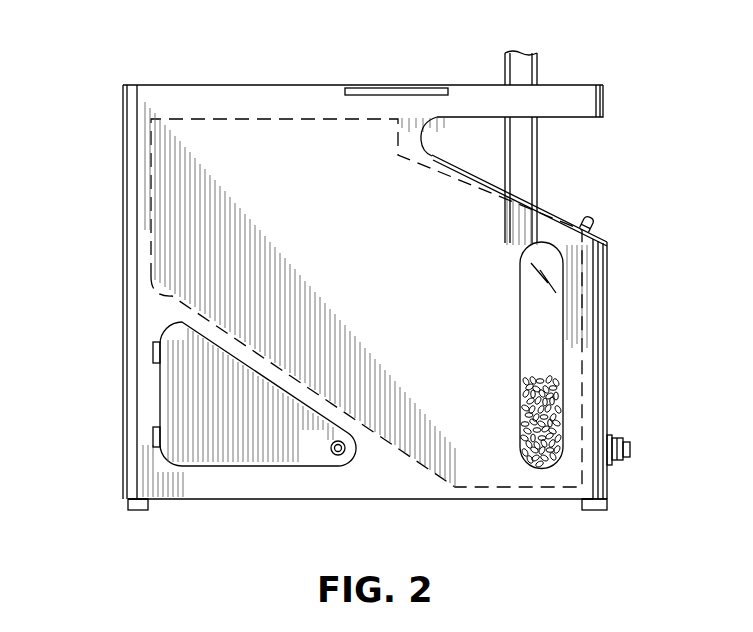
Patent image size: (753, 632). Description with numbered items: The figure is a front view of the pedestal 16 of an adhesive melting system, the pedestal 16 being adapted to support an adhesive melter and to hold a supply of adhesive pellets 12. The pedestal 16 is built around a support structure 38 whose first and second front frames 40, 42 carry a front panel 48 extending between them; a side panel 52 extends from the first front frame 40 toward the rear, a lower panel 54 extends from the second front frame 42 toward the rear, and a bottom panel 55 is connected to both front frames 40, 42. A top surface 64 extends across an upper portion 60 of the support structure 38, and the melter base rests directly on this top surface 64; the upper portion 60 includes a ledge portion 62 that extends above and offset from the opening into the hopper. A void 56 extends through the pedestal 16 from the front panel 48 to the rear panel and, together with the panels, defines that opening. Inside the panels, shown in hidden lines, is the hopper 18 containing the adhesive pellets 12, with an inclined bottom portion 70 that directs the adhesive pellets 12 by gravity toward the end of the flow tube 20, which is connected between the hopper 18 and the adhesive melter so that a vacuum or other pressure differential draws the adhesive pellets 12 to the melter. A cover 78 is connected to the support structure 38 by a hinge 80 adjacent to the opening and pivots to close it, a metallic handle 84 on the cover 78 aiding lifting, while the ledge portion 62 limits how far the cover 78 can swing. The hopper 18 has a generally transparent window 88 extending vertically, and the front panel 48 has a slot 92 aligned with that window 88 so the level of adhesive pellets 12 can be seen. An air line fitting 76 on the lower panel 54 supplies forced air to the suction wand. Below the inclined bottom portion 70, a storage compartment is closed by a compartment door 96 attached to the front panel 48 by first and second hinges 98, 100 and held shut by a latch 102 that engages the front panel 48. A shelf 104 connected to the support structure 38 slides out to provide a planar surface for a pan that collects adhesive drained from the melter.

The pedestal 16 is at (139, 47).
The top surface 64 is at (255, 85).
The shelf 104 is at (355, 88).
The hinge 80 is at (437, 85).
The flow tube 20 is at (540, 62).
The upper portion 60 is at (608, 86).
The ledge portion 62 is at (568, 104).
The void 56 is at (476, 166).
The cover 78 is at (555, 213).
The handle 84 is at (592, 222).
The hopper 18 is at (150, 202).
The inclined bottom portion 70 is at (153, 297).
The side panel 52 is at (123, 313).
The lower panel 54 is at (607, 313).
The front panel 48 is at (400, 309).
The generally transparent window 88 is at (552, 353).
The adhesive pellets 12 is at (563, 387).
The slot 92 is at (526, 462).
The air line fitting 76 is at (631, 448).
The first hinge 98 is at (153, 352).
The second hinge 100 is at (153, 437).
The compartment door 96 is at (202, 452).
The latch 102 is at (338, 456).
The support structure 38 is at (127, 504).
The first front frame 40 is at (138, 511).
The second front frame 42 is at (595, 511).
The bottom panel 55 is at (262, 502).